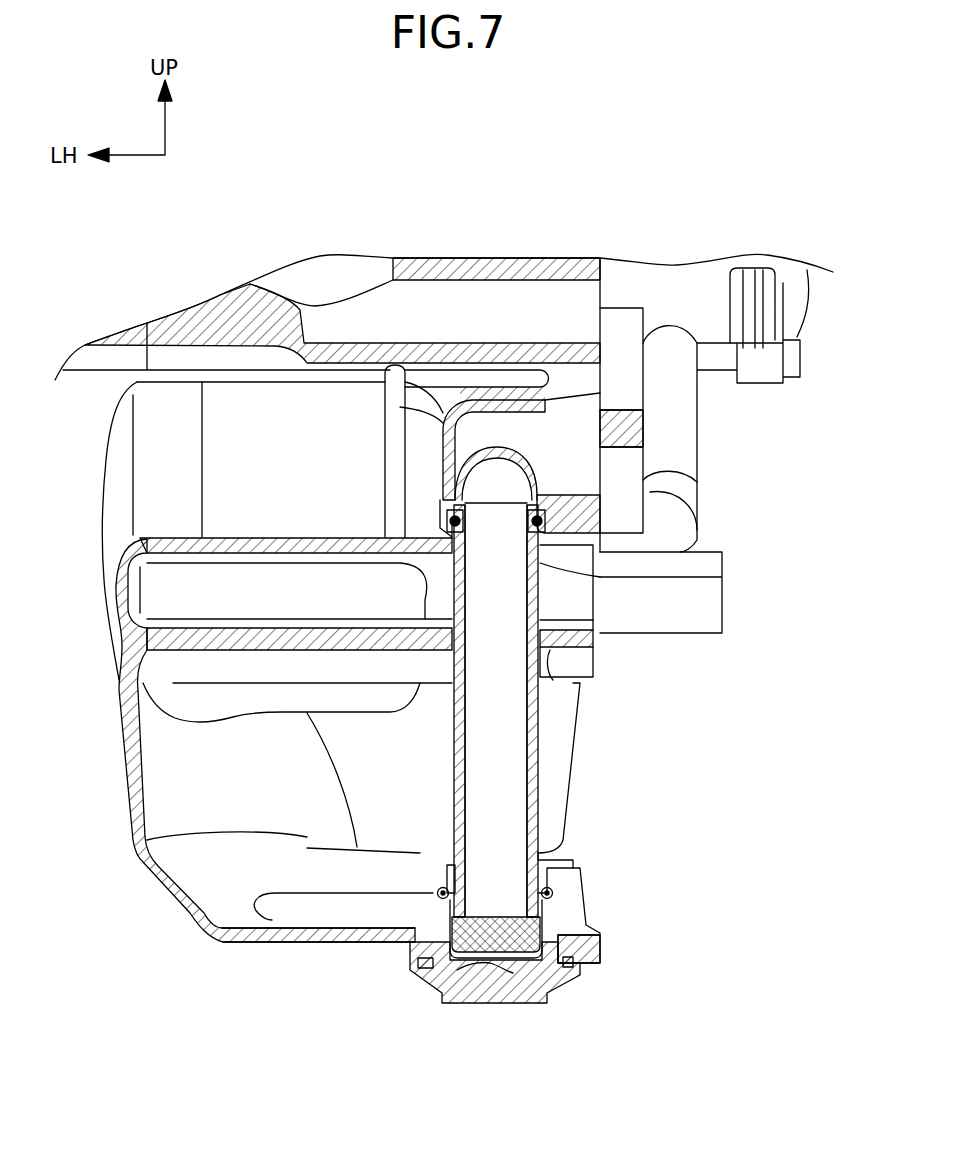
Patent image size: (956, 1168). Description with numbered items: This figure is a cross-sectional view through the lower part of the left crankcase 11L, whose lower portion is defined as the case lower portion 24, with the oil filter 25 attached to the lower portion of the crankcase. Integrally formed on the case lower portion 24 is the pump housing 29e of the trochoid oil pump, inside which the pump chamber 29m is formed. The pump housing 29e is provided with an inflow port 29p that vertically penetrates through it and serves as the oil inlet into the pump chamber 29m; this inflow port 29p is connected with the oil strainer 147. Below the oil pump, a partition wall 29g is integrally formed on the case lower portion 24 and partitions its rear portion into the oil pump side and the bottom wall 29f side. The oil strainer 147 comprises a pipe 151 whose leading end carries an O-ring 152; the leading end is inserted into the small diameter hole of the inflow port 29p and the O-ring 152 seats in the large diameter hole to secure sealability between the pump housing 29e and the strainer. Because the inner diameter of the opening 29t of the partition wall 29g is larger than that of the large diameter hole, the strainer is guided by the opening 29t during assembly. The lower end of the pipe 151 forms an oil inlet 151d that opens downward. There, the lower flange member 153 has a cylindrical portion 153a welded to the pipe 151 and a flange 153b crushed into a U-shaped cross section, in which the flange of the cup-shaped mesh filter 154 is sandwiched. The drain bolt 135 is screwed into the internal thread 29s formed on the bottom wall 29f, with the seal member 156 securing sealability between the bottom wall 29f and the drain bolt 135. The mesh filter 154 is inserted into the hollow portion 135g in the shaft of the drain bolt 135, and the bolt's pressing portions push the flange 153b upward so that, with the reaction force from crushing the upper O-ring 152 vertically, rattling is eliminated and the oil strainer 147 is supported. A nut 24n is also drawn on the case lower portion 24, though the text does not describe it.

The left crankcase 11L is at (144, 264).
The case lower portion 24 is at (219, 295).
The nut 24n is at (403, 419).
The oil filter 25 is at (112, 488).
The pump housing 29e is at (453, 417).
The pump chamber 29m is at (502, 481).
The inflow port 29p is at (722, 577).
The partition wall 29g is at (595, 637).
The opening 29t is at (563, 683).
The oil strainer 147 is at (540, 722).
The pipe 151 is at (540, 788).
The O-ring 152 is at (548, 515).
The lower flange member 153 is at (545, 880).
The cylindrical portion 153a is at (437, 872).
The flange 153b is at (558, 890).
The internal thread 29s is at (565, 930).
The bottom wall 29f is at (252, 945).
The drain bolt 135 is at (571, 989).
The hollow portion 135g is at (513, 975).
The mesh filter 154 is at (487, 954).
The oil inlet 151d is at (527, 960).
The seal member 156 is at (425, 985).